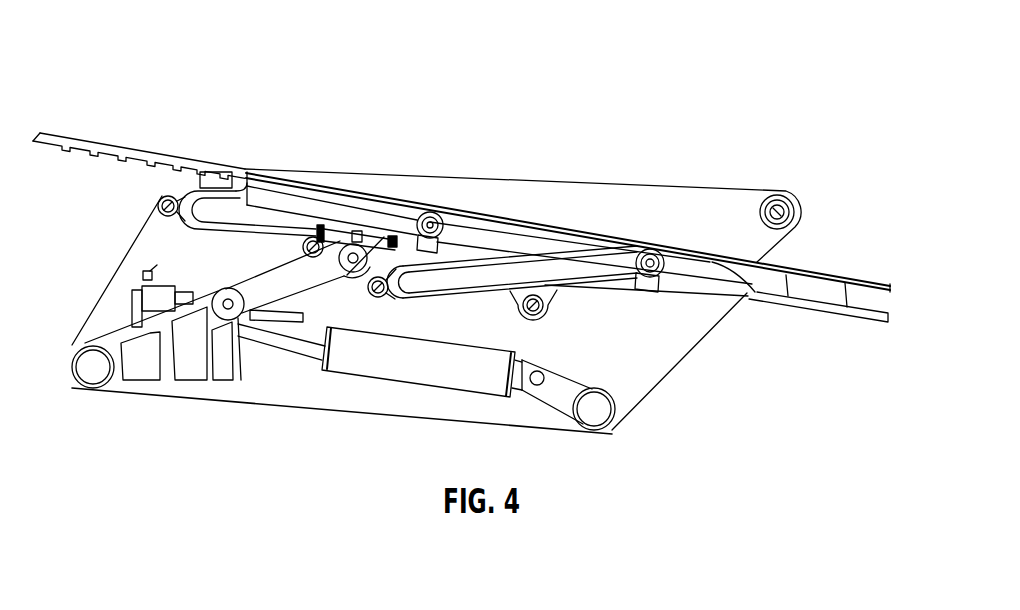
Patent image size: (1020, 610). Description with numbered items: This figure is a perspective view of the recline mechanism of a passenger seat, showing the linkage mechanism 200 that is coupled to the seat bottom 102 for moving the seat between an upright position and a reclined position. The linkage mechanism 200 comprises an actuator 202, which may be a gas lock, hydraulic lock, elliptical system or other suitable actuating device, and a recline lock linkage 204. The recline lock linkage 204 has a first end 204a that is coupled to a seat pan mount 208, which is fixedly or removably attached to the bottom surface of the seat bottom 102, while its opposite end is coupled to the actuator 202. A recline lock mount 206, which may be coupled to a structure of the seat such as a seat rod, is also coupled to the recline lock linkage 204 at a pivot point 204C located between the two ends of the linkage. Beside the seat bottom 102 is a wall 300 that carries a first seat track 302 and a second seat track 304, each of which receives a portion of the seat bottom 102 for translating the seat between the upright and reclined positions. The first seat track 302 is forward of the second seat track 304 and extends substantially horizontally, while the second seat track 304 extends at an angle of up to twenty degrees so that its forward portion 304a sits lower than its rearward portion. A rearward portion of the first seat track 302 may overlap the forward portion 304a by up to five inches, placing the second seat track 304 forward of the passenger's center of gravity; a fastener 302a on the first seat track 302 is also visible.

The linkage mechanism 200 is at (770, 42).
The seat bottom 102 is at (110, 145).
The wall 300 is at (724, 190).
The first seat track 302 is at (197, 191).
The bracket fastener 302a is at (185, 223).
The recline lock mount 206 is at (141, 388).
The pivot point 204C is at (218, 292).
The recline lock linkage 204 is at (278, 296).
The seat pan mount 208 is at (318, 232).
The first end 204a is at (385, 235).
The second seat track 304 is at (588, 291).
The forward portion 304a is at (402, 298).
The actuator 202 is at (443, 390).